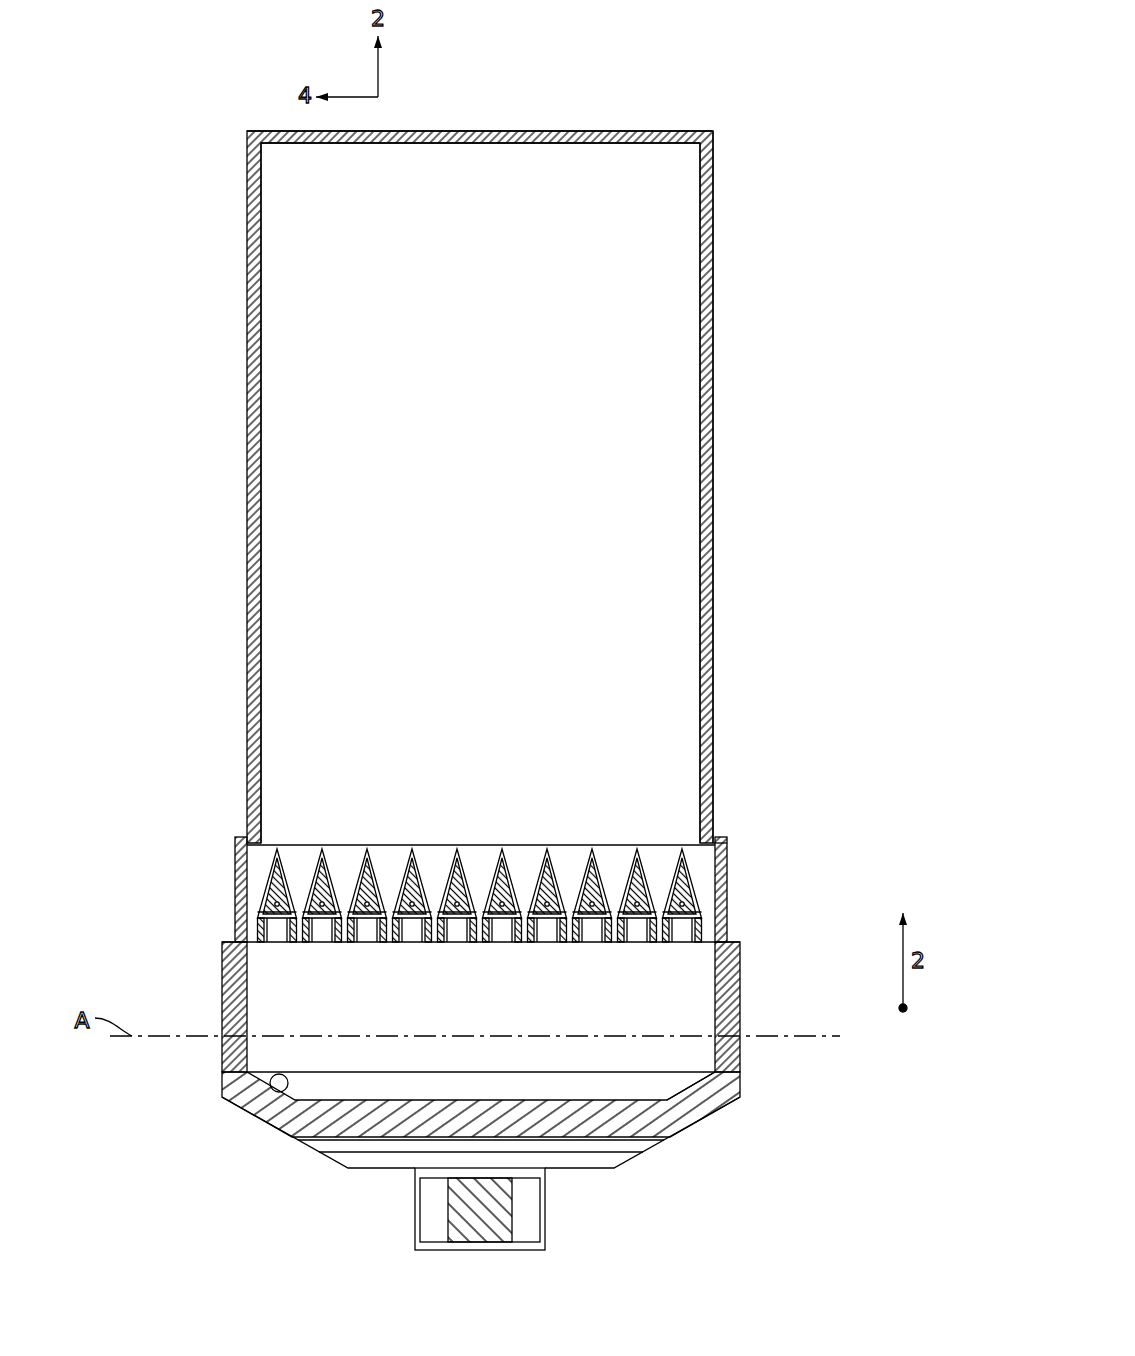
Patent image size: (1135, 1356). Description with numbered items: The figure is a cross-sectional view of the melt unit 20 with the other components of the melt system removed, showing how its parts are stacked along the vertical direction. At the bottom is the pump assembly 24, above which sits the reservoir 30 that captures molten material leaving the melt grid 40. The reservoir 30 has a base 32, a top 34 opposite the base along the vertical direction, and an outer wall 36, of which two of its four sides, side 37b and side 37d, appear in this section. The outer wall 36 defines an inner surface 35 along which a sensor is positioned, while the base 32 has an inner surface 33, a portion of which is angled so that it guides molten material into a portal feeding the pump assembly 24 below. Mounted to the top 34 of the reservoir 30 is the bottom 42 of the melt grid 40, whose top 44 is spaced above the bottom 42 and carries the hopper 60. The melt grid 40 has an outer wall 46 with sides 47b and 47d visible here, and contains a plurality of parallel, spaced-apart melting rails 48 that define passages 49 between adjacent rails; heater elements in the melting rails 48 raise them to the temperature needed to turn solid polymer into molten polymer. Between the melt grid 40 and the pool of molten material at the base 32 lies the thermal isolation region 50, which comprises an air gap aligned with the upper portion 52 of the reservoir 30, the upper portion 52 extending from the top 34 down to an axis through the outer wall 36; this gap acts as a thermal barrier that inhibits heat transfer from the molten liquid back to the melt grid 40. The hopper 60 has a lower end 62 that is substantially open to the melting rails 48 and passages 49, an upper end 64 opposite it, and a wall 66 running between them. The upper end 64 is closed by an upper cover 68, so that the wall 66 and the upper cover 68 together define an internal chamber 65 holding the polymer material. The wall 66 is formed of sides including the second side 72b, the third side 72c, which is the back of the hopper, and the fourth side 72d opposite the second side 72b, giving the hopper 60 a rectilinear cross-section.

The melt unit 20 is at (184, 150).
The pump assembly 24 is at (484, 1256).
The reservoir 30 is at (746, 1017).
The base 32 is at (684, 1127).
The inner surface 33 is at (268, 1092).
The top 34 is at (729, 930).
The inner surface 35 is at (715, 990).
The outer wall 36 is at (240, 1022).
The side 37b is at (240, 1066).
The side 37d is at (740, 1057).
The melt grid 40 is at (731, 861).
The bottom 42 is at (244, 937).
The top 44 is at (274, 845).
The outer wall 46 is at (238, 855).
The side 47b is at (240, 886).
The side 47d is at (727, 888).
The melting rails 48 is at (494, 862).
The passages 49 is at (520, 944).
The thermal isolation region 50 is at (172, 977).
The upper portion 52 is at (236, 974).
The hopper 60 is at (245, 330).
The lower end 62 is at (718, 840).
The upper end 64 is at (651, 129).
The internal chamber 65 is at (641, 424).
The wall 66 is at (713, 495).
The upper cover 68 is at (471, 144).
The second side 72b is at (262, 640).
The third side 72c is at (487, 499).
The fourth side 72d is at (700, 640).